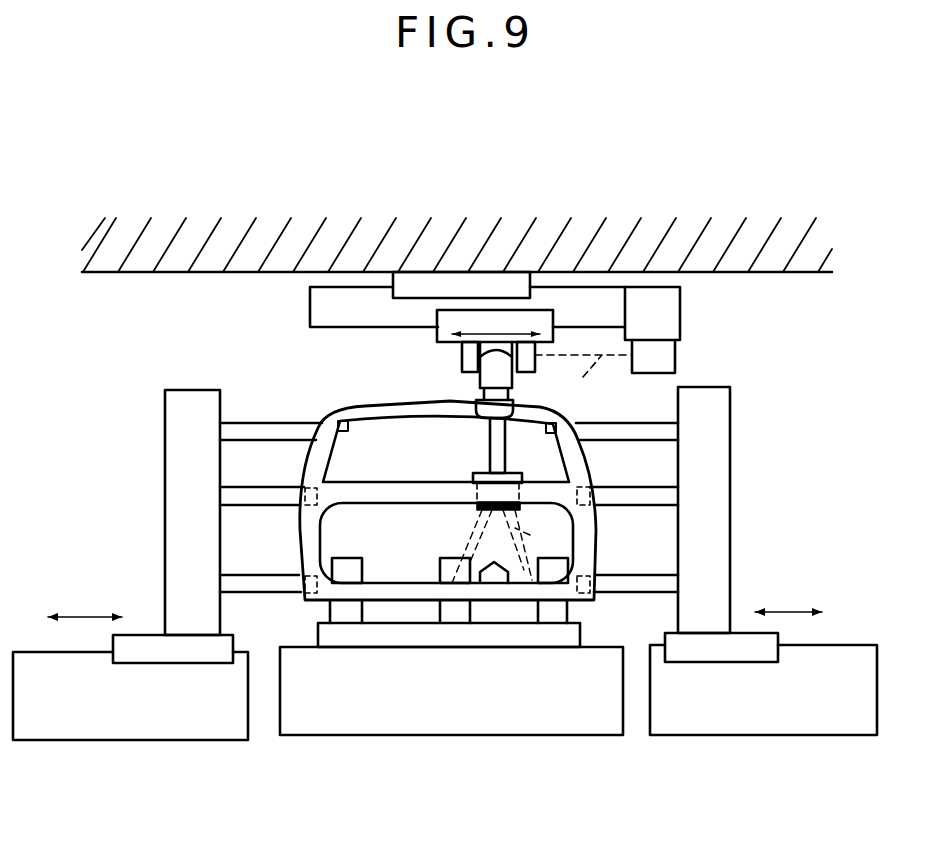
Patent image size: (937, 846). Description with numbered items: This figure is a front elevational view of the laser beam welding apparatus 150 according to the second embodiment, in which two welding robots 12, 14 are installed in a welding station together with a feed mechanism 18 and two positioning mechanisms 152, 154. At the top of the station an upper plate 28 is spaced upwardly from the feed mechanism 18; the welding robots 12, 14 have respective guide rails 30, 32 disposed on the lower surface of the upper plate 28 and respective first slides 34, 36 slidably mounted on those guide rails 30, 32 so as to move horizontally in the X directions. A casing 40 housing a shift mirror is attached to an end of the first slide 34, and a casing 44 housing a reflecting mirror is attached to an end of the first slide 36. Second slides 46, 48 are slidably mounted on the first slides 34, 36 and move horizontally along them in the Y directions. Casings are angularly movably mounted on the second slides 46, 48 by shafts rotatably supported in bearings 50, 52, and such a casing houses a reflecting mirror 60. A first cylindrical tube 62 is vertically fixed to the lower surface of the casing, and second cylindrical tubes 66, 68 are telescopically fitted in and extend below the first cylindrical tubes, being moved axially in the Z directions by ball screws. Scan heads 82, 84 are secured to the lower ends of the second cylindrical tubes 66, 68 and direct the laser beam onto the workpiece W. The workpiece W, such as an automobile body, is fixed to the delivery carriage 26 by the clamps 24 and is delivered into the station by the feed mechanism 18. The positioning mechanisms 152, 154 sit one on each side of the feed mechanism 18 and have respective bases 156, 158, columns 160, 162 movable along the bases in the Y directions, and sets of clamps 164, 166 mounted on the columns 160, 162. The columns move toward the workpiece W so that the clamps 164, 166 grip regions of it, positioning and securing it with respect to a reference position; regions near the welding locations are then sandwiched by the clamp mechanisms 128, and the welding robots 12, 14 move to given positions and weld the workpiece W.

The laser beam welding apparatus 150 is at (631, 190).
The upper plate 28 is at (790, 272).
The guide rail 30 is at (466, 230).
The guide rail 32 is at (482, 282).
The first slide 34 is at (427, 321).
The first slide 36 is at (322, 318).
The casing 40 is at (702, 330).
The casing 44 is at (668, 357).
The second slide 46 is at (445, 337).
The second slide 48 is at (447, 325).
The welding robot 12 is at (435, 370).
The welding robot 14 is at (457, 372).
The bearing 50 is at (572, 401).
The bearing 52 is at (517, 378).
The reflecting mirror 60 is at (448, 427).
The first cylindrical tube 62 is at (478, 405).
The second cylindrical tube 66 is at (440, 451).
The second cylindrical tube 68 is at (490, 451).
The scan head 82 is at (451, 508).
The scan head 84 is at (478, 506).
The workpiece W is at (306, 557).
The clamp mechanism 128 is at (501, 575).
The clamp 24 is at (330, 614).
The delivery carriage 26 is at (580, 636).
The feed mechanism 18 is at (561, 736).
The positioning mechanism 152 is at (154, 495).
The positioning mechanism 154 is at (744, 490).
The column 160 is at (183, 572).
The column 162 is at (722, 553).
The base 156 is at (139, 726).
The base 158 is at (726, 723).
The clamps 164 is at (256, 434).
The clamps 166 is at (606, 438).